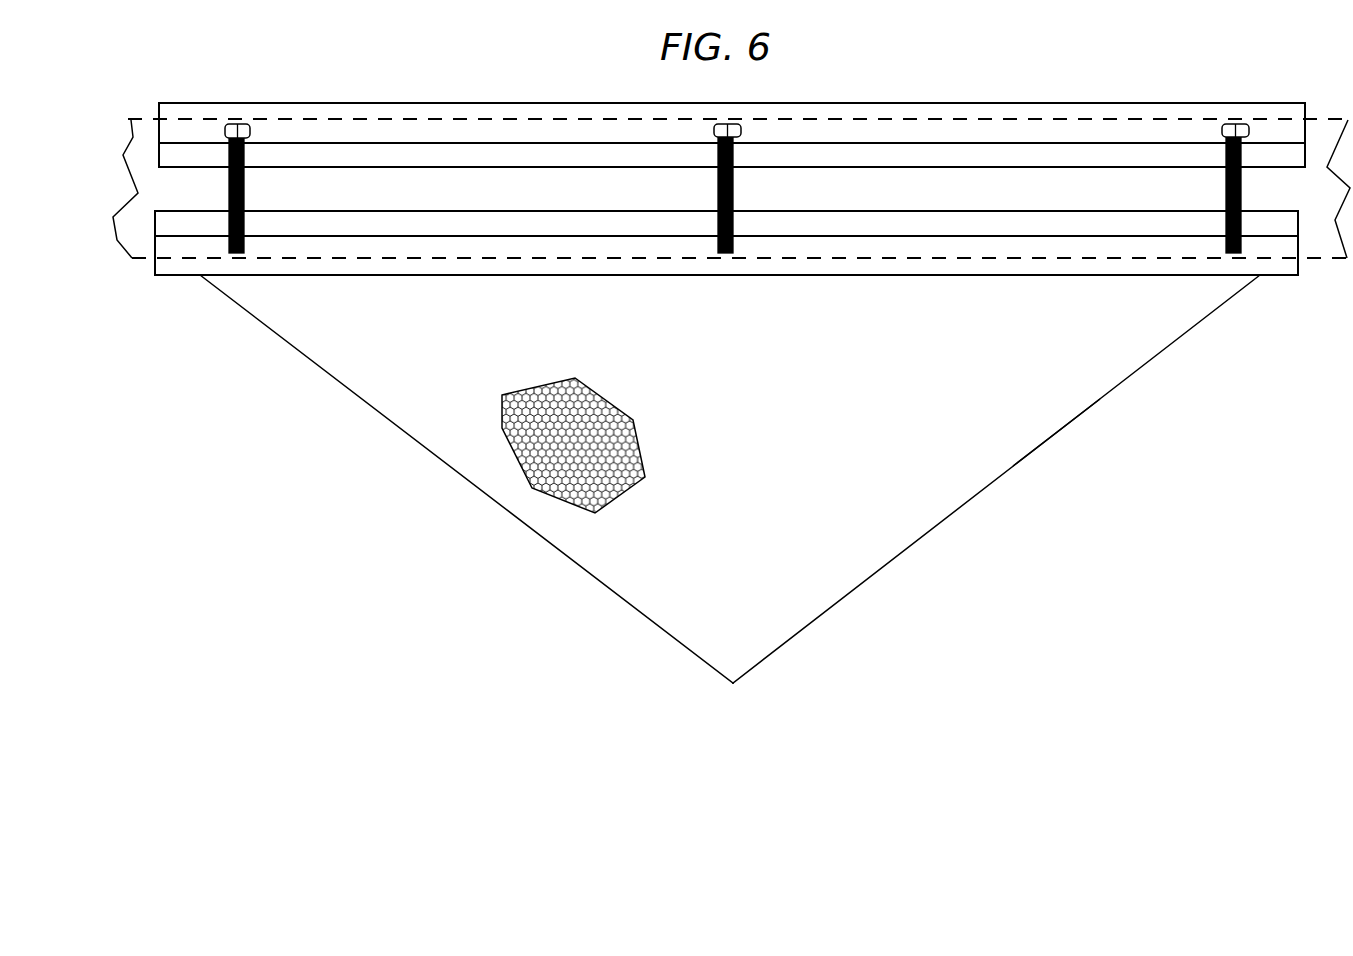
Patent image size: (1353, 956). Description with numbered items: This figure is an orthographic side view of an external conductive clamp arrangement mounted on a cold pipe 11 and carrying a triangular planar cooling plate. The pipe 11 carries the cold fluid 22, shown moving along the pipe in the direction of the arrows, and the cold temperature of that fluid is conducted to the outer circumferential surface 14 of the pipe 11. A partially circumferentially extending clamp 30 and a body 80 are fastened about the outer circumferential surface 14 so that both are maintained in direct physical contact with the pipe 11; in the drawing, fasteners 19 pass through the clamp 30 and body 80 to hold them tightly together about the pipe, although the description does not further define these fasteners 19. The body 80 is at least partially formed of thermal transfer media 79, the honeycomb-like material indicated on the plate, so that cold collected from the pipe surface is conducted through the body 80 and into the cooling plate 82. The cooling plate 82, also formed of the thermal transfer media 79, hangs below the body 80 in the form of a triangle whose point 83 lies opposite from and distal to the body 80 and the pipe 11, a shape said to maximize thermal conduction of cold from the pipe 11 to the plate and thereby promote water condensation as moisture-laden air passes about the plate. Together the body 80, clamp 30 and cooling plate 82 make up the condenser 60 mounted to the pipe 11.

The pipe 11 is at (143, 110).
The outer circumferential surface 14 is at (446, 110).
The fastener bolt 19 is at (248, 182).
The cold fluid 22 is at (606, 188).
The clamp 30 is at (832, 103).
The body 80 is at (802, 222).
The thermal transfer media 79 is at (527, 455).
The cooling plate 82 is at (855, 488).
The point 83 is at (733, 683).
The condenser 60 is at (1016, 482).